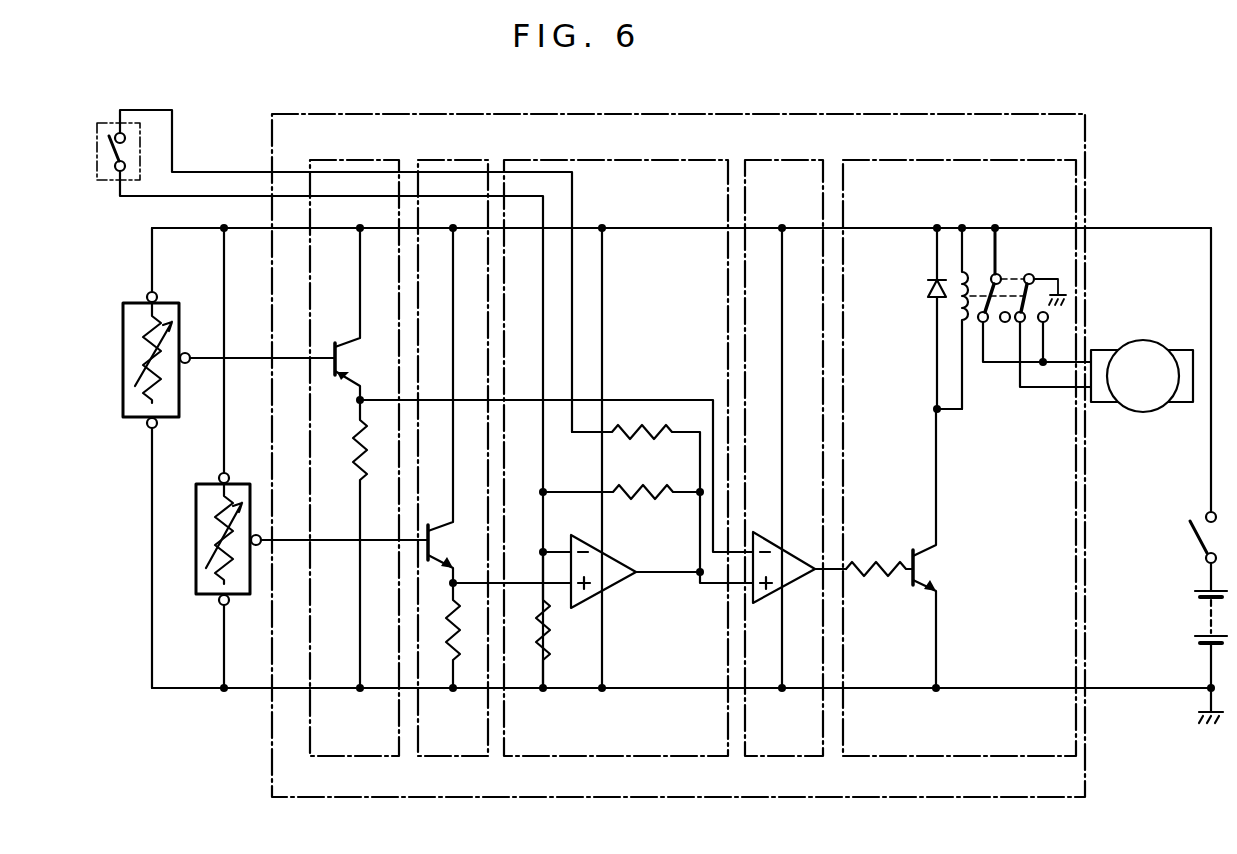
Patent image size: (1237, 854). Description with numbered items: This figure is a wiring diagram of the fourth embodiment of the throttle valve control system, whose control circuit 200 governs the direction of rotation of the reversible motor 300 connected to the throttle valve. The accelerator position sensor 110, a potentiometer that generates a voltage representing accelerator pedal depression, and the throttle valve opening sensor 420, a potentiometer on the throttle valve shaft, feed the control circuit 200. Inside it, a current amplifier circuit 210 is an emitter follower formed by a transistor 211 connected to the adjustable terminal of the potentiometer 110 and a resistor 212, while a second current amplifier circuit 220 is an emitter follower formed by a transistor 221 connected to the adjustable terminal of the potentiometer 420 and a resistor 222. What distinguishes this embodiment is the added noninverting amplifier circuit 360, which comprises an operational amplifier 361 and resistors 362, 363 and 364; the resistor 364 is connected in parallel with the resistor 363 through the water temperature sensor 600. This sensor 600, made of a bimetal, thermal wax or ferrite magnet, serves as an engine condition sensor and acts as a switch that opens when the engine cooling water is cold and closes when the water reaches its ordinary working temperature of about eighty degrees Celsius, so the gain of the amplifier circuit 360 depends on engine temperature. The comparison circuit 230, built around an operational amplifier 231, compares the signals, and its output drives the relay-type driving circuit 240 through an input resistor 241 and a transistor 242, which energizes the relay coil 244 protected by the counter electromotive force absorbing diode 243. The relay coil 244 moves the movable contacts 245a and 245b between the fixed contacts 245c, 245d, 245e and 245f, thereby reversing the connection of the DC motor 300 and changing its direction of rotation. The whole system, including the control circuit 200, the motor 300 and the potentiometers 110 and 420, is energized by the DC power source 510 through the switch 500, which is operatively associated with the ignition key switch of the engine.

The control circuit 200 is at (962, 108).
The current amplifier circuit 210 is at (318, 162).
The current amplifier circuit 220 is at (432, 162).
The noninverting amplifier circuit 360 is at (606, 162).
The comparison circuit 230 is at (762, 162).
The relay-type driving circuit 240 is at (962, 162).
The water temperature sensor 600 is at (108, 186).
The accelerator position sensor 110 is at (124, 302).
The throttle valve opening sensor 420 is at (198, 484).
The transistor 211 is at (352, 338).
The resistor 212 is at (352, 440).
The transistor 221 is at (436, 543).
The resistor 222 is at (462, 620).
The operational amplifier 361 is at (614, 580).
The resistor 362 is at (550, 640).
The resistor 363 is at (634, 503).
The resistor 364 is at (634, 443).
The operational amplifier 231 is at (800, 556).
The input resistor 241 is at (878, 560).
The transistor 242 is at (926, 565).
The counter electromotive force absorbing diode 243 is at (926, 292).
The relay coil 244 is at (958, 275).
The movable contact 245a is at (998, 274).
The movable contact 245b is at (1030, 274).
The fixed contact 245c is at (979, 321).
The fixed contact 245d is at (1004, 322).
The fixed contact 245e is at (1025, 321).
The fixed contact 245f is at (1047, 313).
The reversible motor 300 is at (1162, 411).
The switch 500 is at (1197, 545).
The DC power source 510 is at (1199, 612).